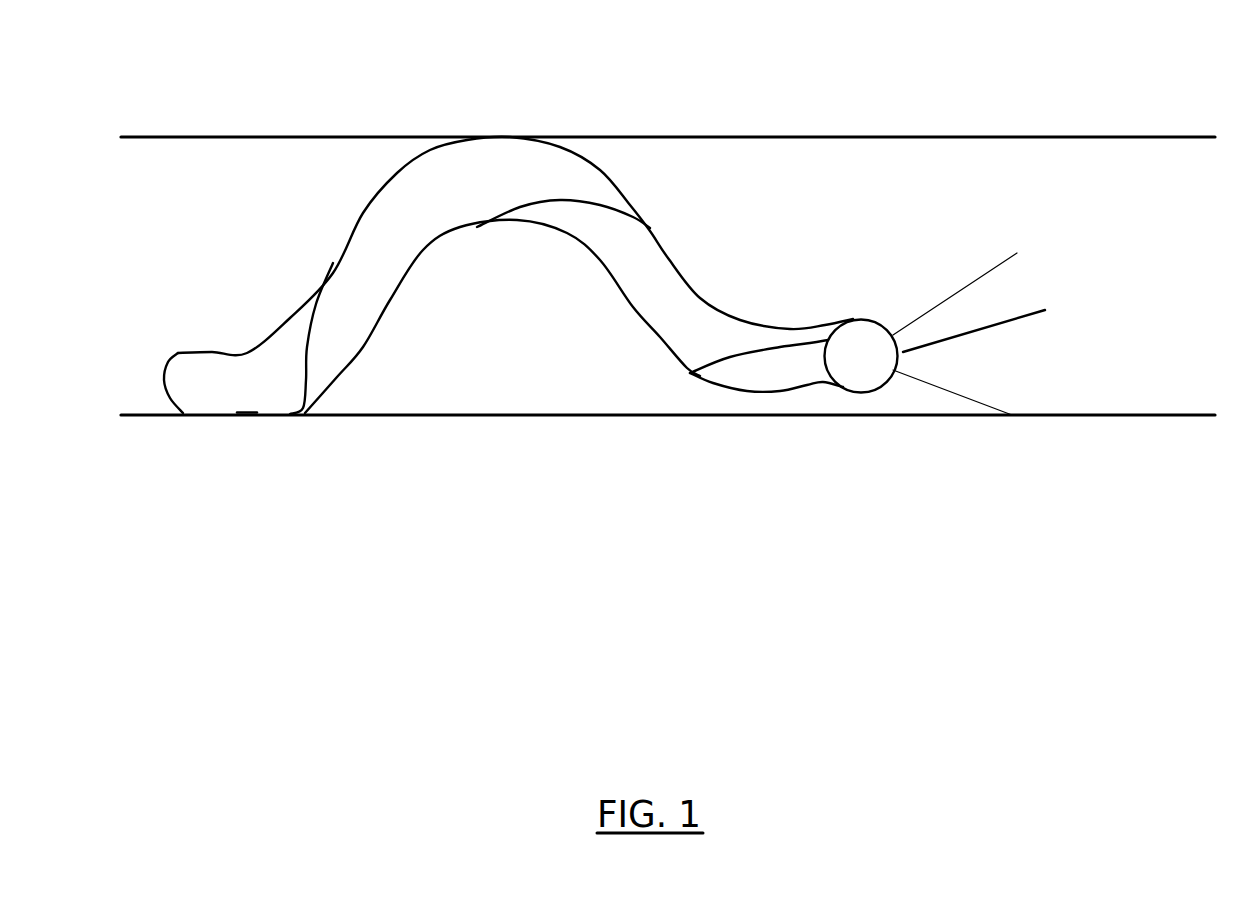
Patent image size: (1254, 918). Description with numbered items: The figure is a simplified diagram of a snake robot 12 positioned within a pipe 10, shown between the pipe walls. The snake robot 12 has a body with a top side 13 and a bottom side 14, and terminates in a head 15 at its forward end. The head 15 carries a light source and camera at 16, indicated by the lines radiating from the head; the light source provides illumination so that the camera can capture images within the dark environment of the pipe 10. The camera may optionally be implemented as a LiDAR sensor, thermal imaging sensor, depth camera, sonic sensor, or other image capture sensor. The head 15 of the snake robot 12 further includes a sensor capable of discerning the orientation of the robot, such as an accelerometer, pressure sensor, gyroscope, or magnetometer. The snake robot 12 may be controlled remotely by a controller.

The pipe 10 is at (668, 235).
The snake robot 12 is at (432, 345).
The top side 13 is at (537, 206).
The bottom side 14 is at (745, 420).
The head 15 is at (906, 414).
The light source and camera 16 is at (1015, 334).